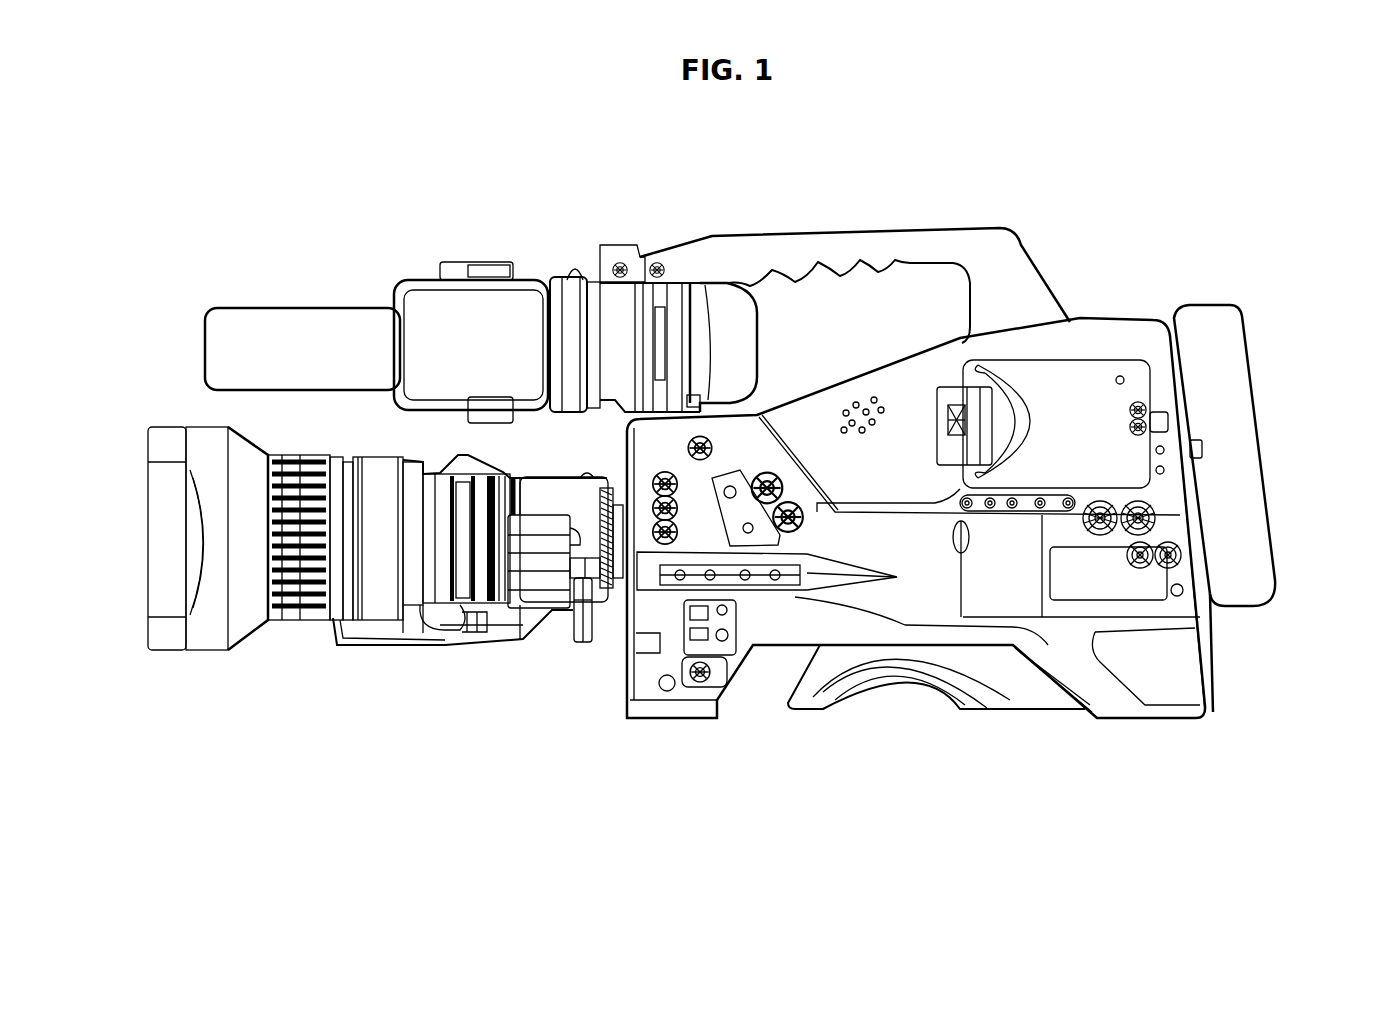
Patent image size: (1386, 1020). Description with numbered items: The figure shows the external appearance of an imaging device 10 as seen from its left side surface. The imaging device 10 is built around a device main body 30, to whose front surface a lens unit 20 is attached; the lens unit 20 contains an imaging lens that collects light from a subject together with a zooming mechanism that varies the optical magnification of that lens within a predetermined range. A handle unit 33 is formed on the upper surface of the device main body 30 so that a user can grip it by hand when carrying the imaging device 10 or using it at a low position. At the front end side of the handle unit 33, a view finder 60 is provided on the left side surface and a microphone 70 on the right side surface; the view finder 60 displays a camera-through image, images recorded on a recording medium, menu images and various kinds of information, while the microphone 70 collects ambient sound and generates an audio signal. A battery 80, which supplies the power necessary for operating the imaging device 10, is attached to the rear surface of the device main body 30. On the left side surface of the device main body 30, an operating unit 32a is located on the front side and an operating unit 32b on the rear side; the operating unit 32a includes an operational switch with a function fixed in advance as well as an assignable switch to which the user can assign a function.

The imaging device 10 is at (972, 894).
The lens unit 20 is at (287, 649).
The device main body 30 is at (1099, 752).
The operating unit 32a is at (778, 750).
The operating unit 32b is at (1223, 710).
The handle unit 33 is at (885, 228).
The view finder 60 is at (530, 265).
The microphone 70 is at (278, 306).
The battery 80 is at (1245, 340).